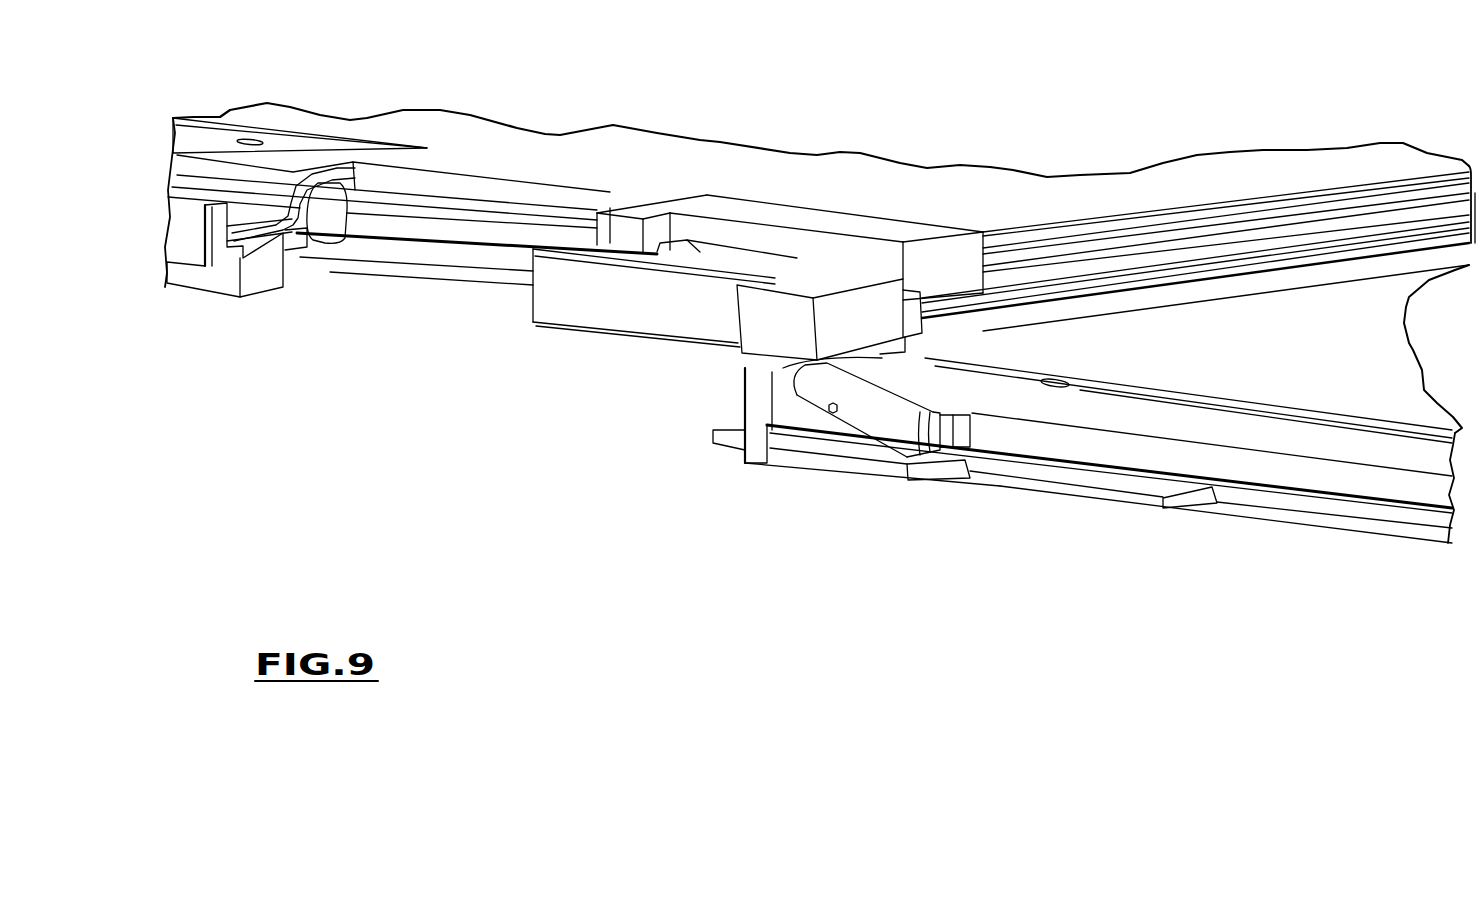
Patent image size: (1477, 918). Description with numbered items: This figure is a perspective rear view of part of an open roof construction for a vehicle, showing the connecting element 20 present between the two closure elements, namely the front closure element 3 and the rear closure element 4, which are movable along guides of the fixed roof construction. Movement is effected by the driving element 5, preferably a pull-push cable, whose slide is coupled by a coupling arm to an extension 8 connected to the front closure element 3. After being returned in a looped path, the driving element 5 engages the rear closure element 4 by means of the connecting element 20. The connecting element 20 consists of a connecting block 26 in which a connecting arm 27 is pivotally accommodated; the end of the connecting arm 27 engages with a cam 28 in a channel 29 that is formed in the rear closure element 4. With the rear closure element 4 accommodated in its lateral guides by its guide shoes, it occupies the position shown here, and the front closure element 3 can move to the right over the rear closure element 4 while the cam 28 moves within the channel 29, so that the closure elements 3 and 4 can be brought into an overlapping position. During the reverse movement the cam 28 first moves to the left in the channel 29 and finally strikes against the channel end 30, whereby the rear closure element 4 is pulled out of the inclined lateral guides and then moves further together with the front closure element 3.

The front closure element 3 is at (927, 188).
The rear closure element 4 is at (1327, 318).
The driving element 5 is at (470, 233).
The extension 8 is at (325, 148).
The connecting element 20 is at (600, 315).
The connecting block 26 is at (608, 247).
The connecting arm 27 is at (903, 420).
The cam 28 is at (963, 437).
The channel 29 is at (1268, 472).
The channel end 30 is at (797, 408).